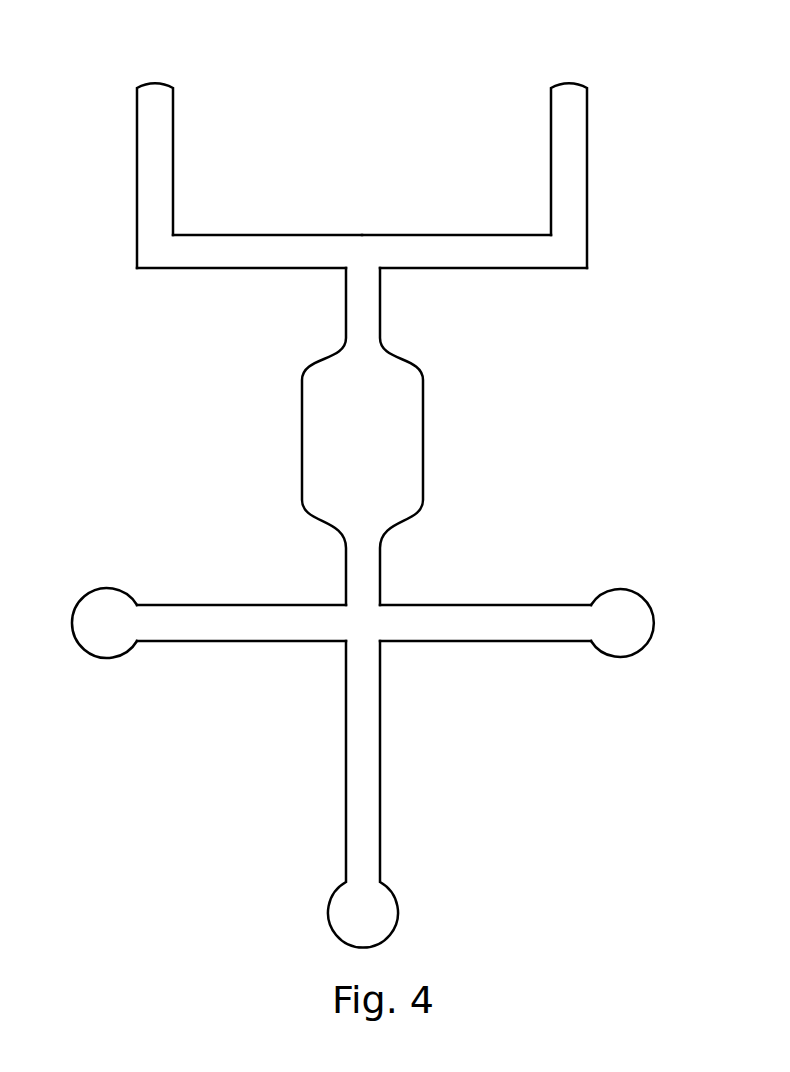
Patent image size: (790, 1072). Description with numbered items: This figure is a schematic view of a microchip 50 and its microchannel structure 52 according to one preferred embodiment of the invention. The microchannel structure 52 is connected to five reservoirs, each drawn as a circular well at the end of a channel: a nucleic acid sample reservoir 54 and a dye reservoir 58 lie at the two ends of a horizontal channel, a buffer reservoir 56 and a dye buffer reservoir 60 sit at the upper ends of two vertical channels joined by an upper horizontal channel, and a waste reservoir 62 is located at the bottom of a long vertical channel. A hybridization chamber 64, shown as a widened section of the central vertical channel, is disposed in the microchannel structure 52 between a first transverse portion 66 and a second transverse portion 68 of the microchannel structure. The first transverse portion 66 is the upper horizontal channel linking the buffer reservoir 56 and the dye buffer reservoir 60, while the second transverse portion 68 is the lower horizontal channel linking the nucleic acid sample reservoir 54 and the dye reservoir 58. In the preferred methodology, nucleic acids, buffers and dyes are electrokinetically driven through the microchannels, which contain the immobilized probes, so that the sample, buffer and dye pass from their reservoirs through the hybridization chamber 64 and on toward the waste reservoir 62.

The microchip 50 is at (363, 479).
The microchannel structure 52 is at (261, 224).
The nucleic acid sample reservoir 54 is at (73, 618).
The buffer reservoir 56 is at (121, 50).
The dye reservoir 58 is at (628, 592).
The dye buffer reservoir 60 is at (604, 50).
The waste reservoir 62 is at (400, 913).
The hybridization chamber 64 is at (425, 405).
The first transverse portion 66 is at (466, 234).
The second transverse portion 68 is at (481, 604).